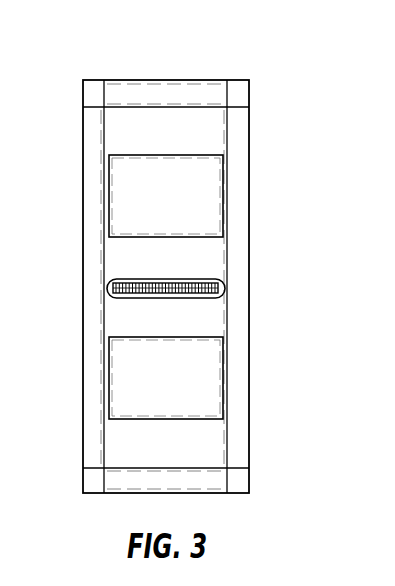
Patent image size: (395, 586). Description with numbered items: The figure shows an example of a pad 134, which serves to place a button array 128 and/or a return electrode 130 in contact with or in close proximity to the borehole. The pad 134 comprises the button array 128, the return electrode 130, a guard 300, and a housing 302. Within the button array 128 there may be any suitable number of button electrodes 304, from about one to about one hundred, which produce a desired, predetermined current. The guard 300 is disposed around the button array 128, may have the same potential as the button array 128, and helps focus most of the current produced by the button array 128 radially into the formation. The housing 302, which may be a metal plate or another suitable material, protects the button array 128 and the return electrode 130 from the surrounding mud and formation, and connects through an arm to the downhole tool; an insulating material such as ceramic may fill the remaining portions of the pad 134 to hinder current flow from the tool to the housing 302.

The pad 134 is at (178, 249).
The housing 302 is at (252, 94).
The return electrode 130 is at (212, 195).
The button array 128 is at (162, 283).
The guard 300 is at (118, 297).
The button electrode 304 is at (208, 293).